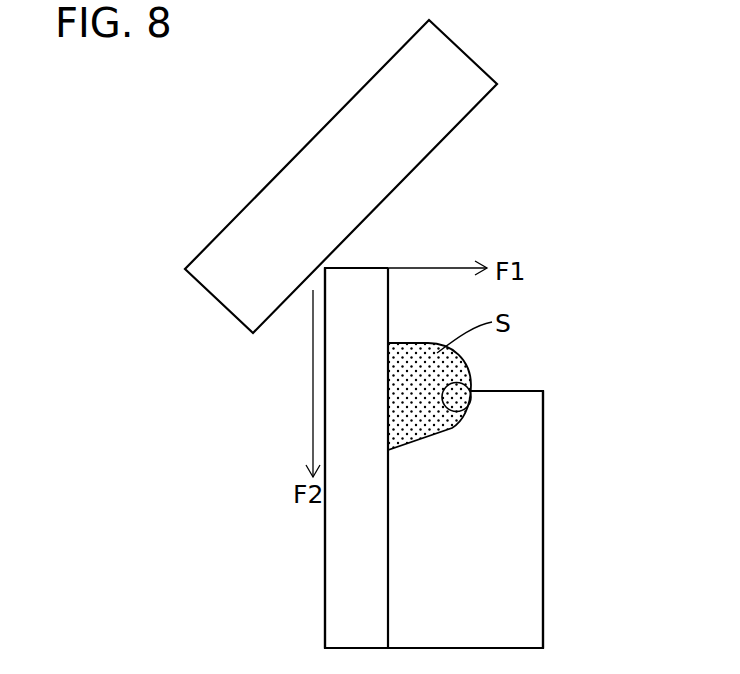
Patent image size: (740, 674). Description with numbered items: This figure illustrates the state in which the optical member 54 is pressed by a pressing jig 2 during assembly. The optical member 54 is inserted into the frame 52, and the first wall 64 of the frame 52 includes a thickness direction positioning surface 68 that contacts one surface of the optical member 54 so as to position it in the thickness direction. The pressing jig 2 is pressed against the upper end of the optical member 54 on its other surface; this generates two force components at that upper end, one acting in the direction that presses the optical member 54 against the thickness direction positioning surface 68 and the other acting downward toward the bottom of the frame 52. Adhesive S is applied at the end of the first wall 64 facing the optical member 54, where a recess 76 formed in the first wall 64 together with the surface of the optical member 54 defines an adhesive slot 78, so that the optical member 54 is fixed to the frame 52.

The pressing jig 2 is at (279, 108).
The frame 52 is at (545, 495).
The optical member 54 is at (333, 563).
The first wall 64 is at (533, 573).
The thickness direction positioning surface 68 is at (347, 600).
The recess 76 is at (539, 380).
The adhesive slot 78 is at (470, 375).